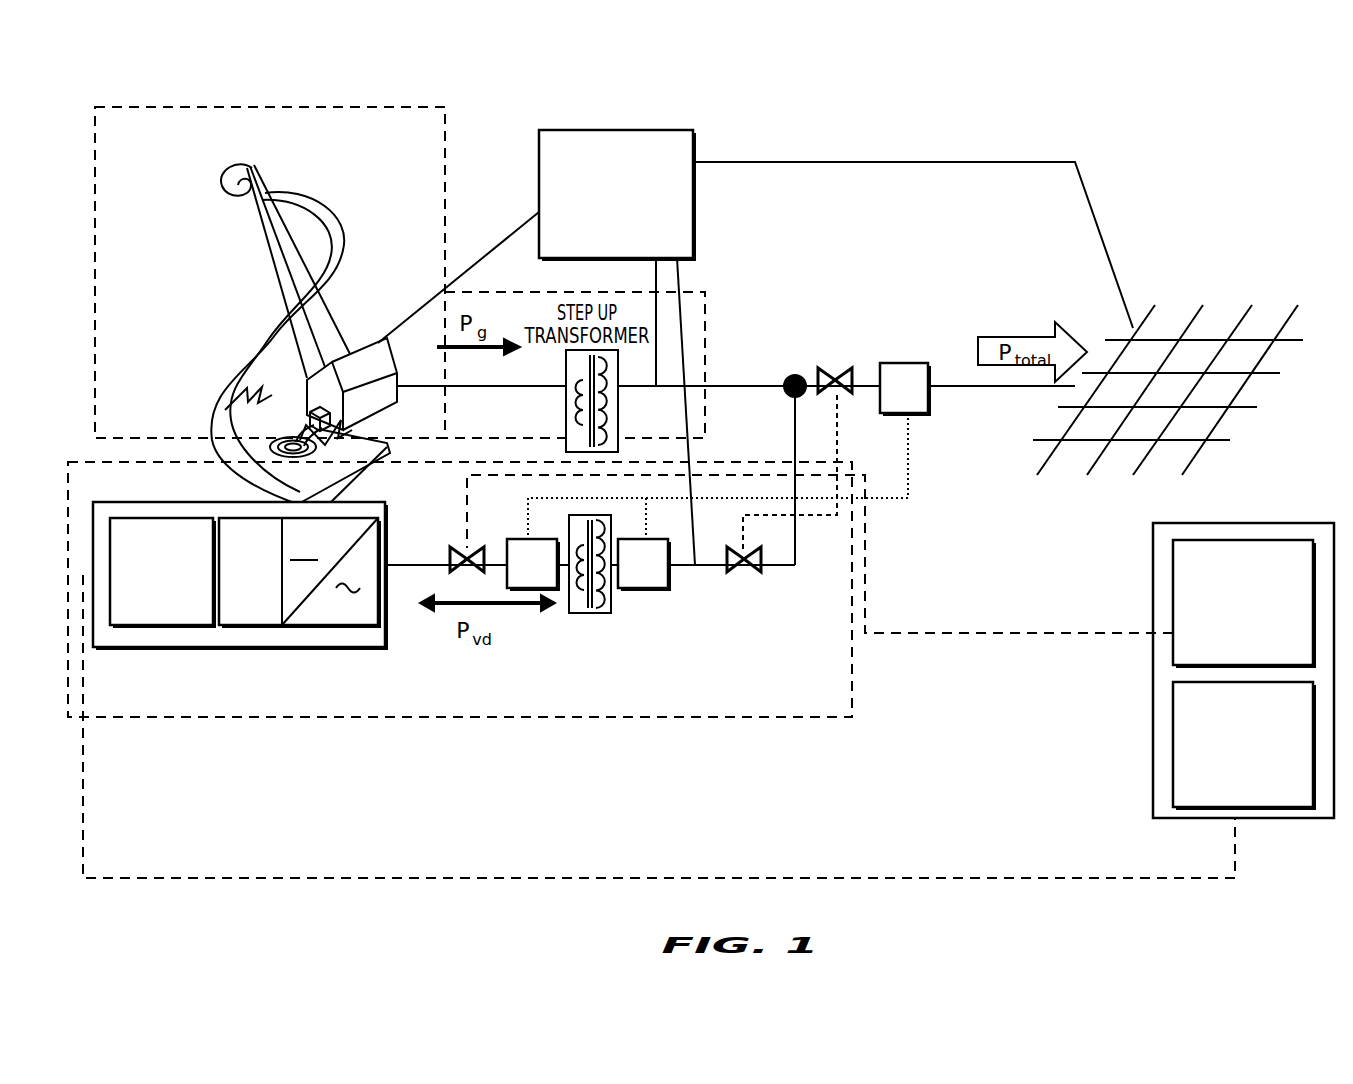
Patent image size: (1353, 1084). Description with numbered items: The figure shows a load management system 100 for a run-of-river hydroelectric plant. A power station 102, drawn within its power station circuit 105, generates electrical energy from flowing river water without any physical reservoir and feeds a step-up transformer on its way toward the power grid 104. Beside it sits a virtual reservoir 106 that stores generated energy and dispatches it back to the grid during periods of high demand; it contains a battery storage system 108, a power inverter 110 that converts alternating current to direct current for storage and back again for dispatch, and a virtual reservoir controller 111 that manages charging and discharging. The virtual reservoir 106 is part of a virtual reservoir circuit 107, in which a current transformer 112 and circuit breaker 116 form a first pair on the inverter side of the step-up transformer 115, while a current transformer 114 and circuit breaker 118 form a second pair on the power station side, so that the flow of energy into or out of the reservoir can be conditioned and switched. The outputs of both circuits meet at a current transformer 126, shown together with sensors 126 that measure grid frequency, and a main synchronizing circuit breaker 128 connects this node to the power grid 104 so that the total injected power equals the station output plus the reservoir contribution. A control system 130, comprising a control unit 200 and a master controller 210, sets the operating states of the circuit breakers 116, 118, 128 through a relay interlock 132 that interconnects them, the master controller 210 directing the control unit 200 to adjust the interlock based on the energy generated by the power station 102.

The system 100 is at (995, 769).
The power station 102 is at (370, 356).
The power grid 104 is at (1195, 265).
The power station circuit 105 is at (265, 107).
The virtual reservoir 106 is at (240, 619).
The virtual reservoir circuit 107 is at (568, 717).
The battery storage system 108 is at (237, 518).
The power inverter 110 is at (374, 647).
The virtual reservoir controller 111 is at (170, 518).
The current transformer 112 is at (466, 553).
The current transformer 114 is at (740, 640).
The step-up transformer 115 is at (600, 668).
The circuit breaker 116 is at (528, 590).
The circuit breaker 118 is at (660, 590).
The current transformer / sensors 126 is at (601, 230).
The circuit breaker 128 is at (892, 250).
The control system 130 is at (1243, 628).
The relay interlock 132 is at (906, 500).
The control unit 200 is at (1228, 647).
The master controller 210 is at (1228, 792).